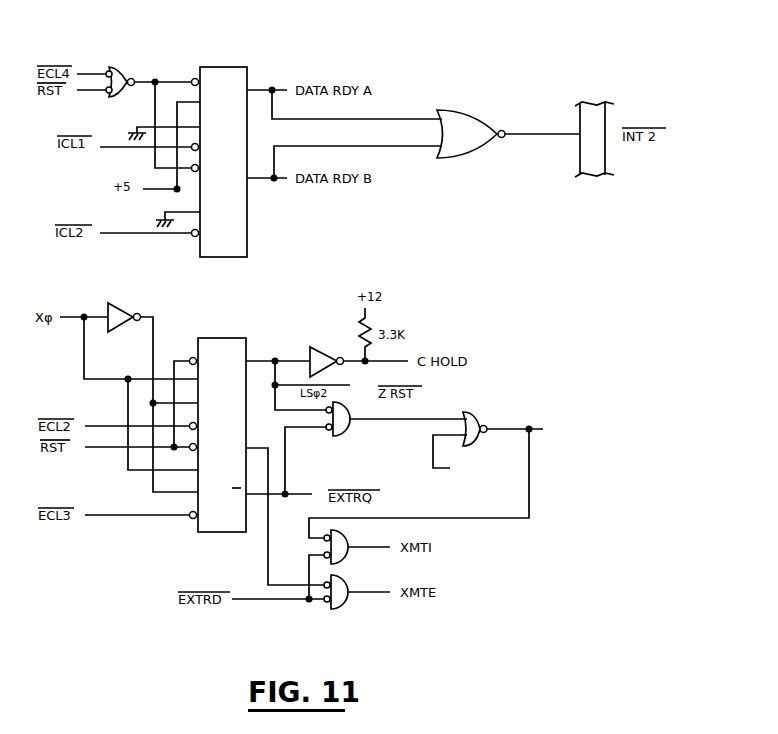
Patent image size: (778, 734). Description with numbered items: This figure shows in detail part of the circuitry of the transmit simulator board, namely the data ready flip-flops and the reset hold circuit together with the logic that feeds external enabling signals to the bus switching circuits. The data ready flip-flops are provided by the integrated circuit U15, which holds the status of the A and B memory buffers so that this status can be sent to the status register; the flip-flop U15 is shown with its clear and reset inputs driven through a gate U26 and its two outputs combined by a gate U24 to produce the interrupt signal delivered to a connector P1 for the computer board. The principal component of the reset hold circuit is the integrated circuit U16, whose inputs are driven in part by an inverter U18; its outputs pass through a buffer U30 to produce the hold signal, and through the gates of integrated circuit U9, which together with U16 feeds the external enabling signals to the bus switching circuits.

The data ready flip-flops U15 is at (219, 143).
The reset hold circuit principal component U16 is at (218, 420).
The inverter (LS04) U18 is at (127, 311).
The NOR gate (LS02) U24 is at (477, 125).
The gate (LS08) U26 is at (117, 61).
The inverter/buffer U30 is at (329, 350).
The bus switching enabling integrated circuit U9 is at (418, 505).
The connector P1 is at (594, 128).